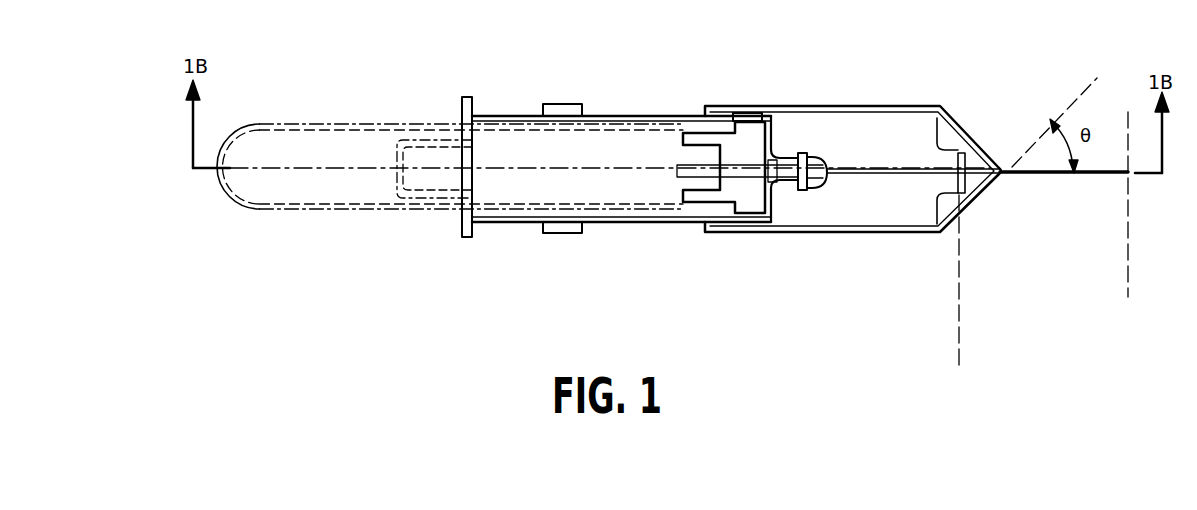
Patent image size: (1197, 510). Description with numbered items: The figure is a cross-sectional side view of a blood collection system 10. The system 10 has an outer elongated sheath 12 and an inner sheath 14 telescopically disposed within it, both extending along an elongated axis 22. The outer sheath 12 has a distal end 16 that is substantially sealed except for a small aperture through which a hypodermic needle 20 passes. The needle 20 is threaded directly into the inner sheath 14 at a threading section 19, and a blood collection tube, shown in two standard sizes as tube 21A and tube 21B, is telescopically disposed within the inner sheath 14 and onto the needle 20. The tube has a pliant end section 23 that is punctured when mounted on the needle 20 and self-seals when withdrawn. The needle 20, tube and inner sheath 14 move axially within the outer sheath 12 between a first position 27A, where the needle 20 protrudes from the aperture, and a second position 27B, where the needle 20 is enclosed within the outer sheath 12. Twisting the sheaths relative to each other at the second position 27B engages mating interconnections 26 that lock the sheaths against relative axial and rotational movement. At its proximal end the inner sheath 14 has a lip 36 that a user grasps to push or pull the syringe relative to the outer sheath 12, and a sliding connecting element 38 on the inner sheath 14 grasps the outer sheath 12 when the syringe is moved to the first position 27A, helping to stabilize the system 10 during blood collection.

The blood collection system 10 is at (528, 327).
The outer elongated sheath 12 is at (807, 105).
The inner sheath 14 is at (506, 224).
The distal end 16 is at (967, 205).
The threading section 19 is at (780, 192).
The hypodermic needle 20 is at (863, 167).
The blood collection tube (size A) 21A is at (320, 208).
The blood collection tube (size B) 21B is at (440, 198).
The elongated axis 22 is at (597, 167).
The pliant end section 23 is at (698, 196).
The mating interconnections 26 is at (762, 101).
The first position 27A is at (1133, 220).
The second position 27B is at (966, 295).
The lip 36 is at (462, 107).
The sliding connecting element 38 is at (563, 104).